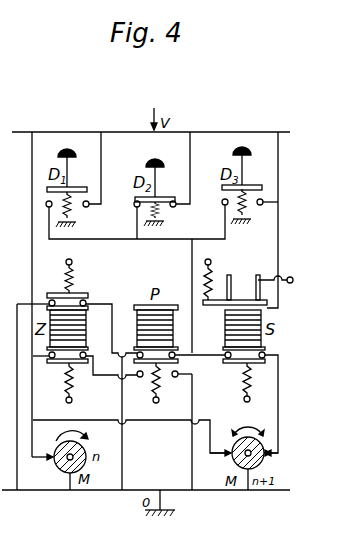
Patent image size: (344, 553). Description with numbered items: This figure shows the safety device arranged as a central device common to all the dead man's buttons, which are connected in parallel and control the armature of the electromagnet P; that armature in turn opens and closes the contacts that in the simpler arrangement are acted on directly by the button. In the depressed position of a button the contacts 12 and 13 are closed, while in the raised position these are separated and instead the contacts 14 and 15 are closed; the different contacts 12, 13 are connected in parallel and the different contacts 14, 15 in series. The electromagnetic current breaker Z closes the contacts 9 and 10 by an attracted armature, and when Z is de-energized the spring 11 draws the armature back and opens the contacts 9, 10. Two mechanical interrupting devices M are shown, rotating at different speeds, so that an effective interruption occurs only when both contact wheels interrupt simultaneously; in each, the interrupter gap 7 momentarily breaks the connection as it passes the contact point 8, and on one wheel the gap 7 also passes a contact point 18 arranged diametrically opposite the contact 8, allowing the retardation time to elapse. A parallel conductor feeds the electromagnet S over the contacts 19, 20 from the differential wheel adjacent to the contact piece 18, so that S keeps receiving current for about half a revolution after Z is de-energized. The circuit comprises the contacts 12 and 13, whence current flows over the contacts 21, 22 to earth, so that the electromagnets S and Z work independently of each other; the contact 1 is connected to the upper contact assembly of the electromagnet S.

The contact of relay S 1 is at (291, 283).
The interrupter gap 7 is at (86, 437).
The contact point 8 is at (48, 459).
The contact 9 is at (49, 355).
The contact 10 is at (86, 360).
The spring 11 is at (65, 386).
The contact 12 is at (113, 346).
The contact 13 is at (174, 352).
The contact 14 is at (140, 377).
The contact 15 is at (176, 377).
The contact point 18 is at (270, 457).
The contact 19 is at (265, 353).
The contact 20 is at (229, 359).
The contact 21 is at (86, 302).
The contact 22 is at (51, 300).